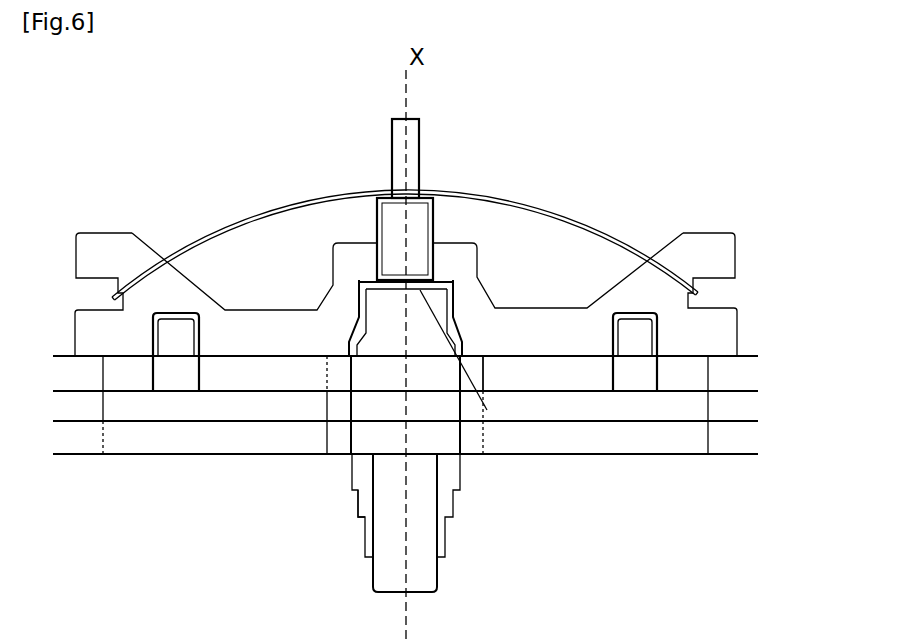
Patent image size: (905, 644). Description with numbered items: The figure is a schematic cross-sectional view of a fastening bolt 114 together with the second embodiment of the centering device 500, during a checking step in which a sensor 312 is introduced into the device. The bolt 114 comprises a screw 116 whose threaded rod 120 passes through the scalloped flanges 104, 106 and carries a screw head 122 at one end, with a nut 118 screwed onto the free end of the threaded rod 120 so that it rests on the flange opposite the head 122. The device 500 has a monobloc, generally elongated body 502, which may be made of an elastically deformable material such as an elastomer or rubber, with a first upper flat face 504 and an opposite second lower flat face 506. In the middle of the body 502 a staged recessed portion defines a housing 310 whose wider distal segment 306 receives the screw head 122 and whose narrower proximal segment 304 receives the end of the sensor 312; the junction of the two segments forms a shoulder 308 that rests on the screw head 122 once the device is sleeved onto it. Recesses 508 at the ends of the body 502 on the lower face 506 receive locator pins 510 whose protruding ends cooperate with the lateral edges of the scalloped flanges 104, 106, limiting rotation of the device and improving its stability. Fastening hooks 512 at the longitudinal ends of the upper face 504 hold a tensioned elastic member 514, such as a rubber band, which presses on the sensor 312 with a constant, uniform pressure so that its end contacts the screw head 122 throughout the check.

The centering device 500 is at (216, 161).
The sensor 312 is at (392, 165).
The shoulder 308 is at (443, 282).
The proximal segment 304 is at (377, 255).
The body 502 is at (470, 298).
The elastic member 514 is at (563, 228).
The fastening hooks 512 is at (93, 250).
The first upper flat face 504 is at (240, 310).
The locator pins 510 is at (155, 342).
The second lower flat face 506 is at (580, 356).
The scalloped flange 104 is at (103, 388).
The scalloped flange 106 is at (103, 448).
The recesses 508 is at (665, 327).
The distal segment 306 is at (360, 342).
The housing 310 is at (483, 356).
The screw head 122 is at (448, 322).
The screw 116 is at (380, 476).
The nut 118 is at (358, 520).
The threaded rod 120 is at (417, 577).
The bolt 114 is at (257, 545).